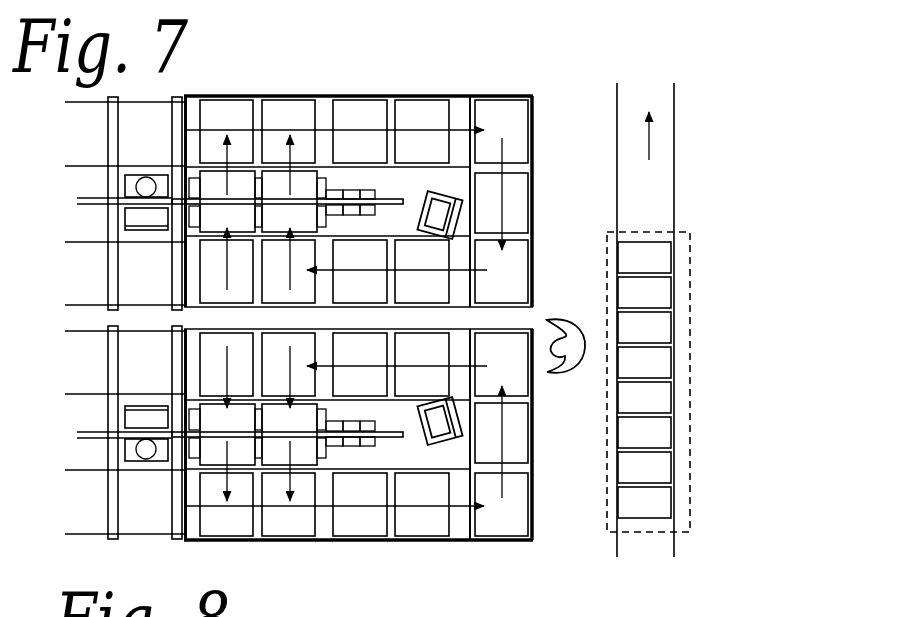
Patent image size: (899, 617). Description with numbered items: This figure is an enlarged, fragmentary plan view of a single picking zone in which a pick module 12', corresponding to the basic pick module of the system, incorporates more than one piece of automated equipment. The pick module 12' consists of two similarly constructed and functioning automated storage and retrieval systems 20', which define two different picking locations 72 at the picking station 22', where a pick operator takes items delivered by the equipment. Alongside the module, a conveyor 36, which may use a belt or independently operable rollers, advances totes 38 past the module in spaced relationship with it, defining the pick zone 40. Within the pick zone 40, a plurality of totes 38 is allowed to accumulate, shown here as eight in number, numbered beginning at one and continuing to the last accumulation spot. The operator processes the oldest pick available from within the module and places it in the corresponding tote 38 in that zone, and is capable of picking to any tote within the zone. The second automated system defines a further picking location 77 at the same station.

The automated storage and retrieval system 20' is at (370, 325).
The pick module 12' is at (708, 294).
The picking location 72 is at (537, 270).
The picking station 22' is at (672, 266).
The totes 38 is at (661, 290).
The pick zone 40 is at (583, 423).
The conveyor 36 is at (677, 487).
The interface of second module 77 is at (538, 385).